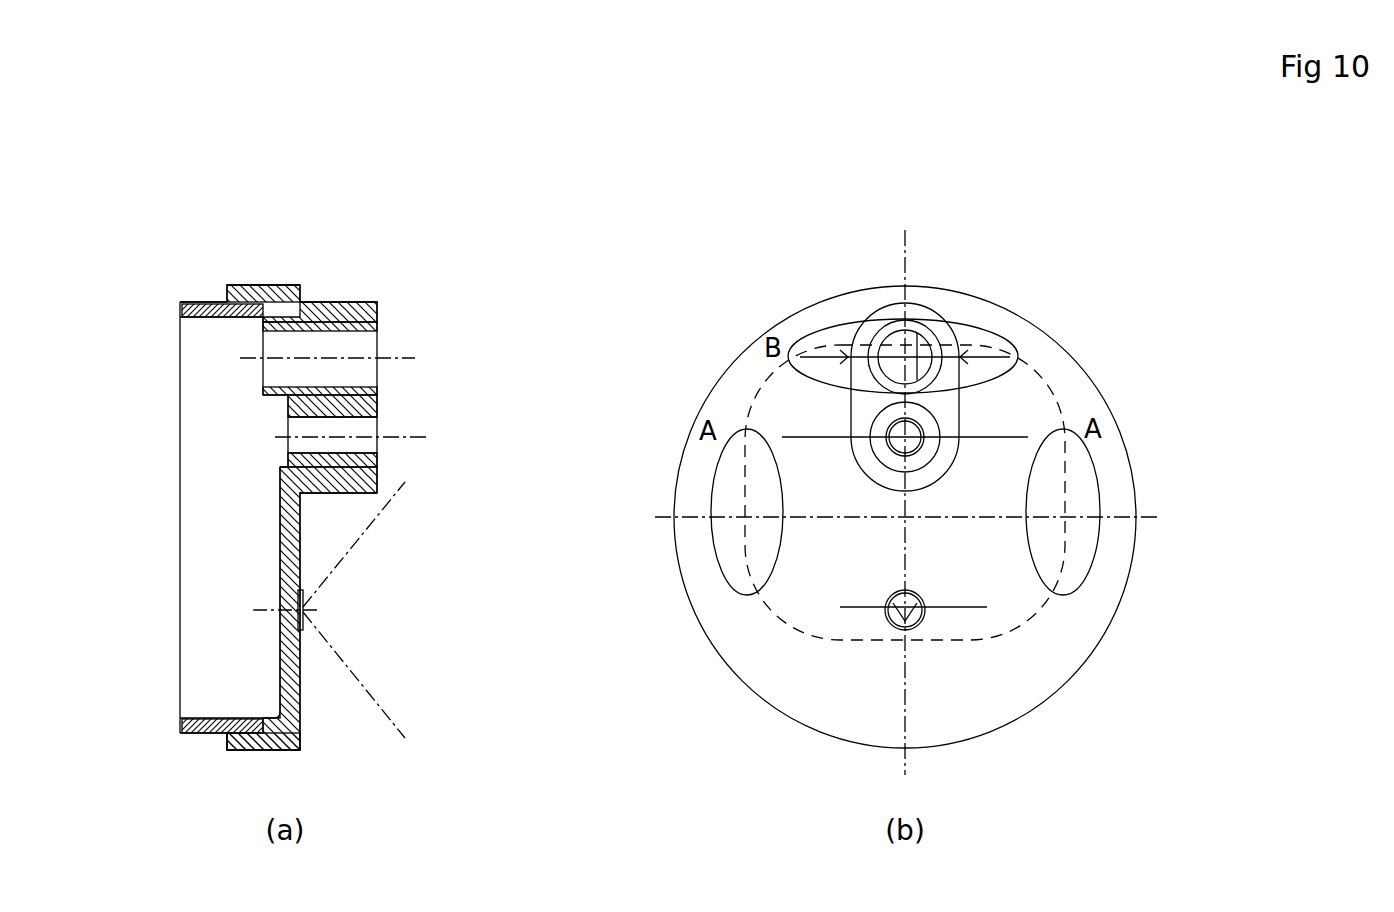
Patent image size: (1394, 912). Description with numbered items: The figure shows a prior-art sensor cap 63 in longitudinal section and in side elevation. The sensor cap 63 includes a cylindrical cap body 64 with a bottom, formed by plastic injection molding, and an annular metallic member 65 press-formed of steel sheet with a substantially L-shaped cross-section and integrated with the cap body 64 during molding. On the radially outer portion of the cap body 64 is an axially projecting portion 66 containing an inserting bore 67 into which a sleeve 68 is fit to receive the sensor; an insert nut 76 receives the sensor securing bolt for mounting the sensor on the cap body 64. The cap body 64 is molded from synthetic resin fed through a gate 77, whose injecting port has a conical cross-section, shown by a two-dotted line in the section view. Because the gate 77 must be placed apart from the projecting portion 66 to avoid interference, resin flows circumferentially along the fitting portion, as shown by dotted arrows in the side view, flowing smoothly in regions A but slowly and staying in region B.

The sensor cap 63 is at (259, 216).
The cap body 64 is at (326, 316).
The annular metallic member 65 is at (249, 302).
The axially projecting portion 66 is at (384, 498).
The inserting bore 67 is at (355, 345).
The sleeve 68 is at (373, 368).
The insert nut 76 is at (318, 467).
The gate 77 is at (305, 606).